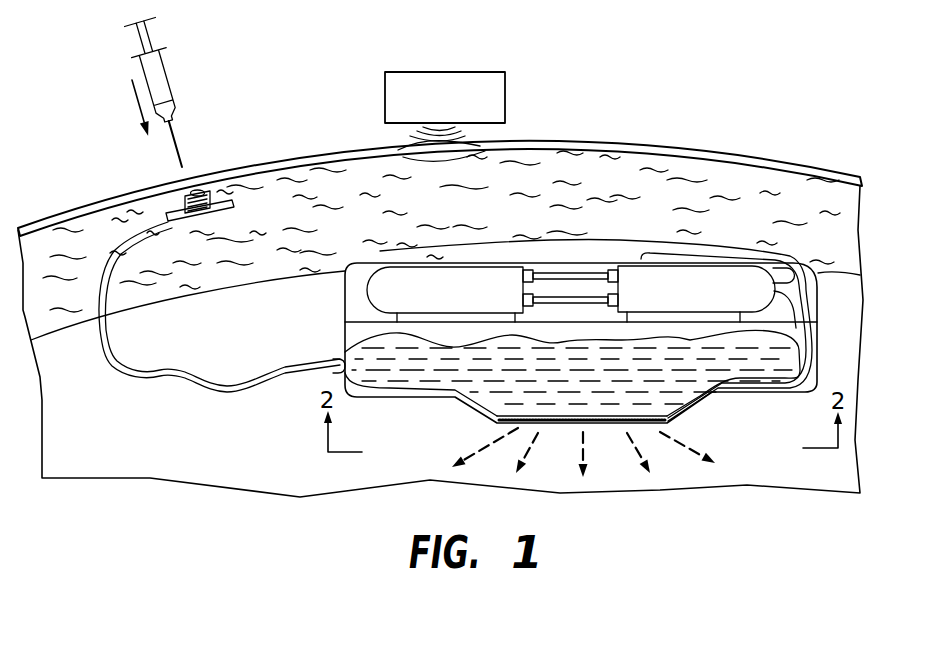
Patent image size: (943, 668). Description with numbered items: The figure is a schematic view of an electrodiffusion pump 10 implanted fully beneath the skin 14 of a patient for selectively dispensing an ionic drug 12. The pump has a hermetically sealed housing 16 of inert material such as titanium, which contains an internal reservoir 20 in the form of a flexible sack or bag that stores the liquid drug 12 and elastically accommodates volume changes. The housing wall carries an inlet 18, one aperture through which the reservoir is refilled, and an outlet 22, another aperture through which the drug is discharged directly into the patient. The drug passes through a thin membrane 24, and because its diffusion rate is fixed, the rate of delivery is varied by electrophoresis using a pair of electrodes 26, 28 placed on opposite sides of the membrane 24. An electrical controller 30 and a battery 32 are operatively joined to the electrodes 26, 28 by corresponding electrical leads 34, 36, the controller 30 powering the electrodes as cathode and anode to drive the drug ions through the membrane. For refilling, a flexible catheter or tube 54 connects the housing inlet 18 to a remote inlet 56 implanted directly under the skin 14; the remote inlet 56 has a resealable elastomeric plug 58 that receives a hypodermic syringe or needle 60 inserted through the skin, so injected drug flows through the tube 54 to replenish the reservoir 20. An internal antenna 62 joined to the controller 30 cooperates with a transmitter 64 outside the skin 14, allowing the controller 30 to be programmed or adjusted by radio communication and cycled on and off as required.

The electrodiffusion pump 10 is at (335, 303).
The ionic drug 12 is at (552, 389).
The skin 14 is at (710, 150).
The housing 16 is at (392, 398).
The inlet 18 is at (338, 360).
The reservoir 20 is at (627, 342).
The outlet 22 is at (517, 432).
The membrane 24 is at (558, 430).
The electrode 26 is at (602, 416).
The electrode 28 is at (606, 430).
The electrical controller 30 is at (670, 266).
The battery 32 is at (460, 266).
The electrical lead 34 is at (774, 296).
The electrical lead 36 is at (799, 272).
The flexible catheter or tube 54 is at (163, 383).
The remote inlet 56 is at (232, 200).
The resealable elastomeric plug 58 is at (200, 192).
The hypodermic syringe or needle 60 is at (168, 83).
The internal antenna 62 is at (711, 250).
The transmitter 64 is at (505, 80).